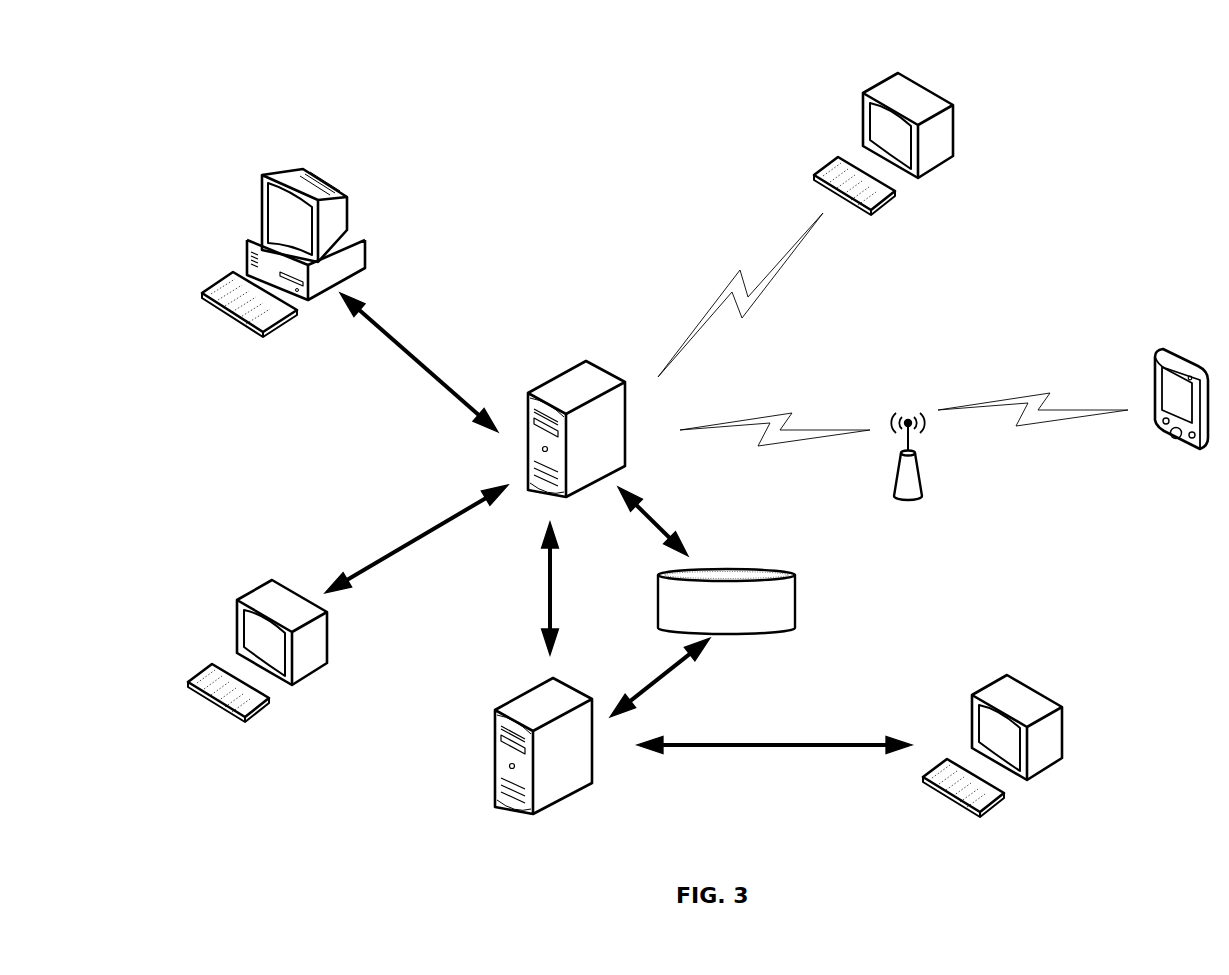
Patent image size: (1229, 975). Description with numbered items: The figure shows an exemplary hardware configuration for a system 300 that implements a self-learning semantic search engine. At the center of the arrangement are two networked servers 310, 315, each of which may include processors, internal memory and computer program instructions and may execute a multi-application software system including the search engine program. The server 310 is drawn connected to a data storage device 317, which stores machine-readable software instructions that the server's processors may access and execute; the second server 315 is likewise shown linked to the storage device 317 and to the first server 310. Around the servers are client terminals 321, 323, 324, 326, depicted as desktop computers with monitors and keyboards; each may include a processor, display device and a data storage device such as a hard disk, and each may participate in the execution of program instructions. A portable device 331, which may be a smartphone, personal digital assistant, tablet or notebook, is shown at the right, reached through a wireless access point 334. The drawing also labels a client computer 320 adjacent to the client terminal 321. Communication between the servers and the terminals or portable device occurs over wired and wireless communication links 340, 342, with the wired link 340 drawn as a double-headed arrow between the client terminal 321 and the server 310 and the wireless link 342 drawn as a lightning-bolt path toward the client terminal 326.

The system 300 is at (229, 33).
The networked server 310 is at (576, 429).
The networked server 315 is at (543, 746).
The data storage device 317 is at (726, 601).
The client computer 320 is at (348, 266).
The client terminal 321 is at (274, 244).
The client terminal 323 is at (257, 633).
The client terminal 324 is at (992, 728).
The client terminal 326 is at (883, 127).
The portable device 331 is at (1155, 388).
The wireless access point 334 is at (929, 456).
The communication link 340 is at (394, 333).
The communication link 342 is at (740, 295).